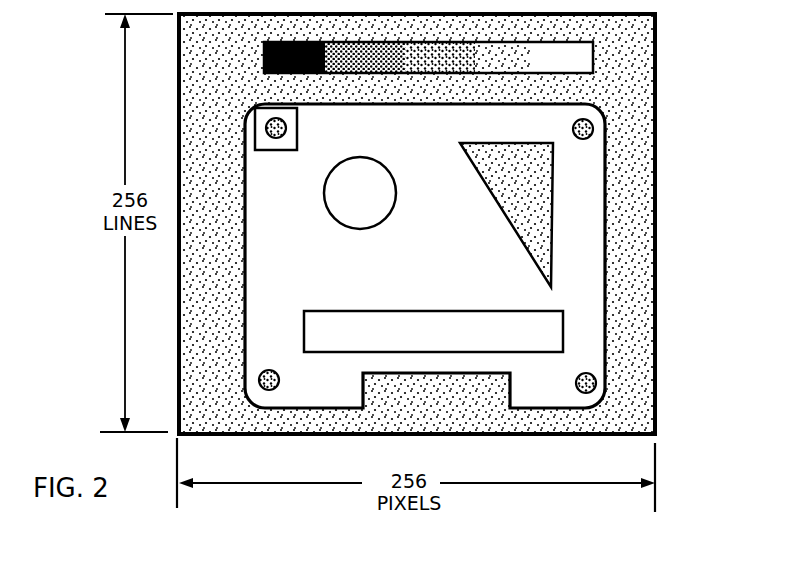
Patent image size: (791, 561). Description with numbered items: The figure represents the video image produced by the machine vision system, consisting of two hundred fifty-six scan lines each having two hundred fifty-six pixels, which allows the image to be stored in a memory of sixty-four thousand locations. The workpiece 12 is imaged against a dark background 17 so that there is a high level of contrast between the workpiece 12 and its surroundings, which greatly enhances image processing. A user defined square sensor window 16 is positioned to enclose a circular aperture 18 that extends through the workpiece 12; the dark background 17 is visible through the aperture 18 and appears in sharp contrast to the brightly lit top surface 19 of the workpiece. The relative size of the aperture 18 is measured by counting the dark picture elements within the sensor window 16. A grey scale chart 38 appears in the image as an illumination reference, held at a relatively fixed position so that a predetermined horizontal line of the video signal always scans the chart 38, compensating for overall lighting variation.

The workpiece 12 is at (580, 186).
The sensor window 16 is at (262, 102).
The dark background 17 is at (634, 283).
The circular aperture 18 is at (268, 130).
The top surface 19 is at (265, 187).
The grey scale chart 38 is at (575, 61).